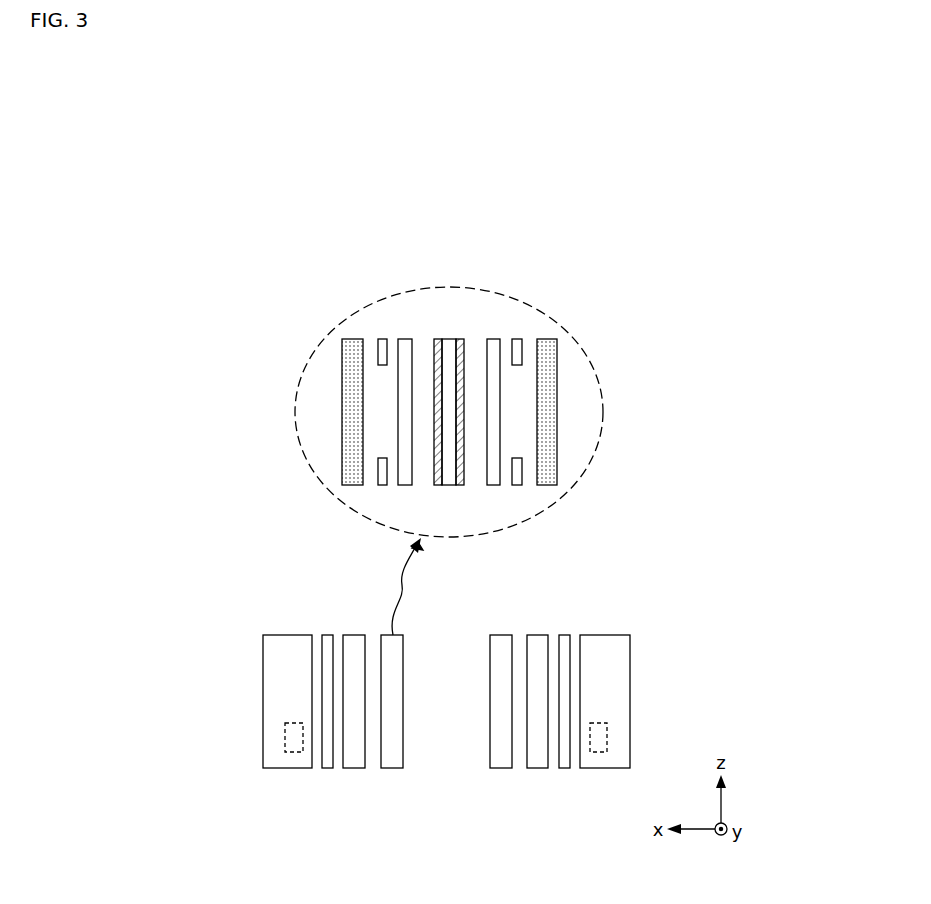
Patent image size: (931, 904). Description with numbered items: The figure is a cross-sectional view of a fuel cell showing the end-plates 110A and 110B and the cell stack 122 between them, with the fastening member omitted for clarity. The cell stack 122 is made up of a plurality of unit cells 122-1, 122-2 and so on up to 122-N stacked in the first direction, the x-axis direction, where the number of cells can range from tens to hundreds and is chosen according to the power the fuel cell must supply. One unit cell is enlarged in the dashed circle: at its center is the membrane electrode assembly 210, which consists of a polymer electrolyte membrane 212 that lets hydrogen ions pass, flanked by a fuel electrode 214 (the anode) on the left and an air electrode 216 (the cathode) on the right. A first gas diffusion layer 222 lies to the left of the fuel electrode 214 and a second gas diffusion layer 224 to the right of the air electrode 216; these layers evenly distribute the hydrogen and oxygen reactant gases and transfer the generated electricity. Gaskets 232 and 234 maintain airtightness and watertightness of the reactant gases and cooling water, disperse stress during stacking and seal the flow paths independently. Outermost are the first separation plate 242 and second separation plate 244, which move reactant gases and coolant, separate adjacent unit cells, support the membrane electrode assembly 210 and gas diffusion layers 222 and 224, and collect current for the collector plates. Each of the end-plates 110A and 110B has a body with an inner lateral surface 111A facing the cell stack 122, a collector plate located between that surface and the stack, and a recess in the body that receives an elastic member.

The membrane electrode assembly 210 is at (397, 214).
The polymer electrolyte membrane 212 is at (448, 339).
The fuel electrode 214 is at (437, 339).
The air electrode 216 is at (460, 339).
The first gas diffusion layer 222 is at (405, 339).
The second gas diffusion layer 224 is at (493, 339).
The gasket 232 is at (382, 339).
The gasket 234 is at (516, 339).
The first separation plate 242 is at (352, 339).
The second separation plate 244 is at (547, 339).
The first end-plate 110A is at (335, 584).
The second end-plate 110B is at (612, 584).
The inner lateral surface 111A is at (315, 768).
The cell stack 122 is at (333, 818).
The unit cell 122-1 is at (348, 768).
The unit cell 122-2 is at (397, 768).
The unit cell 122-N is at (540, 768).